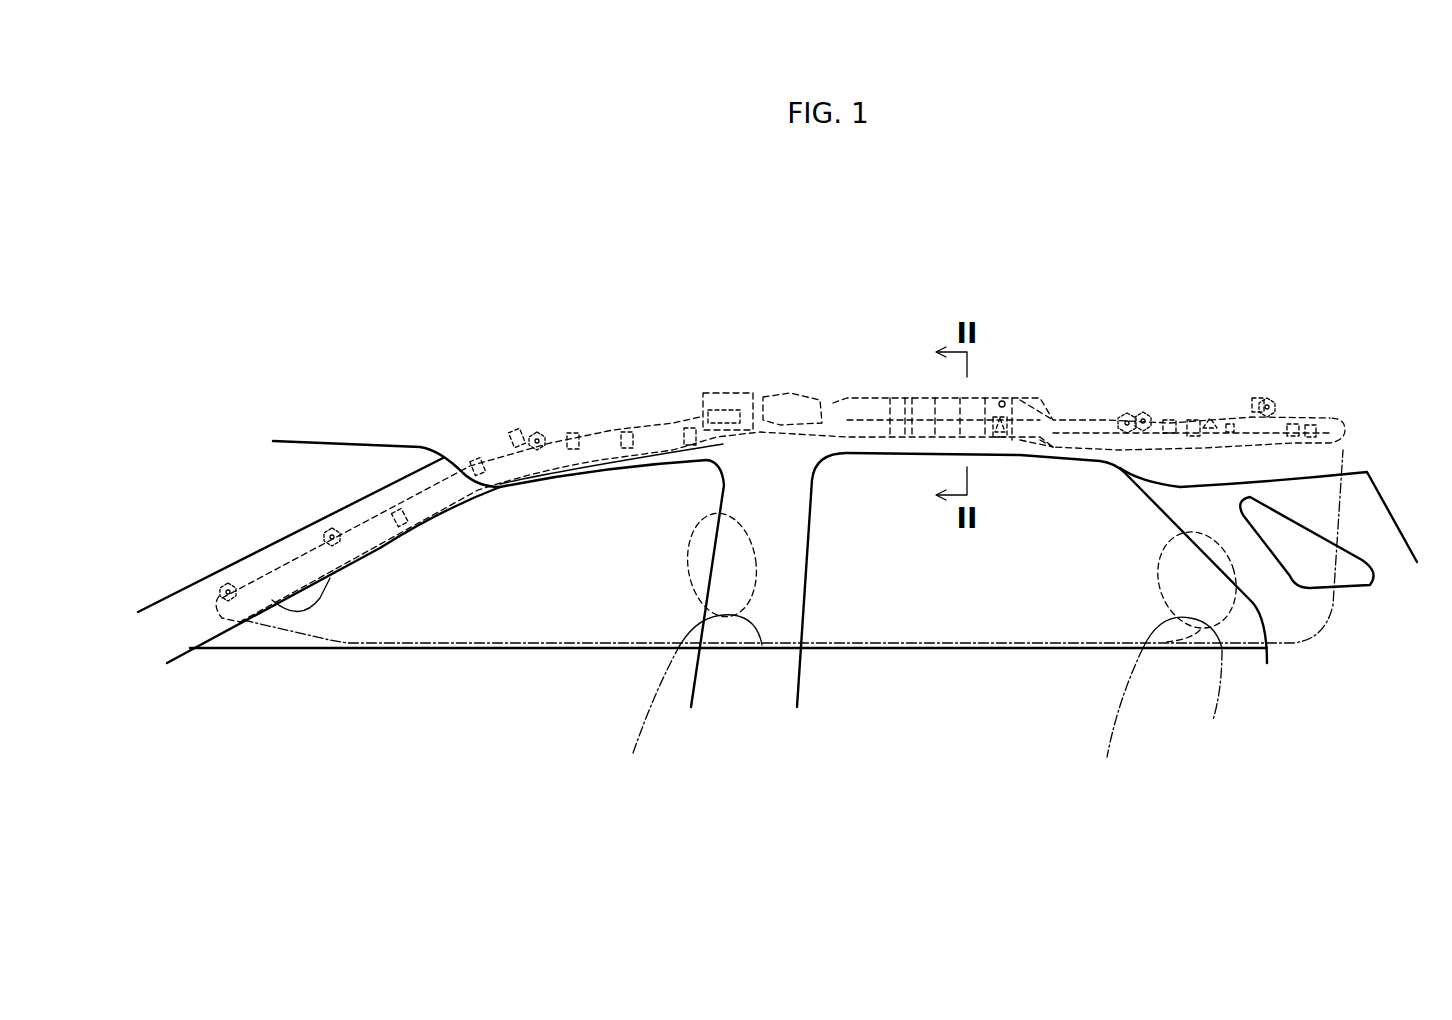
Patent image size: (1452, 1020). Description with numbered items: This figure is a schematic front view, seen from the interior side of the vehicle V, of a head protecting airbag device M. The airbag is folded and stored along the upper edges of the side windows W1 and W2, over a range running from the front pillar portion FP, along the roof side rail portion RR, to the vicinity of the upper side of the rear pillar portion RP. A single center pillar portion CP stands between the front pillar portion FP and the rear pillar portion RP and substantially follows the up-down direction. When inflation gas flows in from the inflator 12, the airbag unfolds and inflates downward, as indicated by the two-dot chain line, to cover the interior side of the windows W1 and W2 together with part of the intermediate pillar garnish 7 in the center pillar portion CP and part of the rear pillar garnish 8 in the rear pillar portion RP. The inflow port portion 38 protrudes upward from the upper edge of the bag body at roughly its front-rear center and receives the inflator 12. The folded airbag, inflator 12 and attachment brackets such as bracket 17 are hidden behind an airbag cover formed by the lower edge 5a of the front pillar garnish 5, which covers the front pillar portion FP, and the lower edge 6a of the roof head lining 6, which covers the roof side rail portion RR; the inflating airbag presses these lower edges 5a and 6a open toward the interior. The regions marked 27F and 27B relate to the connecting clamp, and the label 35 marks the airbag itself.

The front pillar garnish 5 is at (212, 578).
The lower edge of front pillar garnish 5a is at (393, 543).
The roof head lining 6 is at (822, 440).
The lower edge of roof head lining 6a is at (867, 457).
The intermediate pillar garnish 7 is at (730, 582).
The rear pillar garnish 8 is at (1360, 497).
The inflator 12 is at (1008, 393).
The attachment bracket 17 is at (1000, 453).
The front chamber 27F is at (935, 393).
The rear chamber 27B is at (1020, 420).
The airbag 35 is at (1153, 462).
The inflow port portion 38 is at (892, 393).
The roof side rail portion RR is at (562, 430).
The front pillar portion FP is at (222, 640).
The center pillar portion CP is at (813, 590).
The rear pillar portion RP is at (1257, 620).
The window W1 is at (423, 630).
The window W2 is at (967, 628).
The vehicle V is at (1362, 333).
The head protecting airbag device M is at (1340, 400).